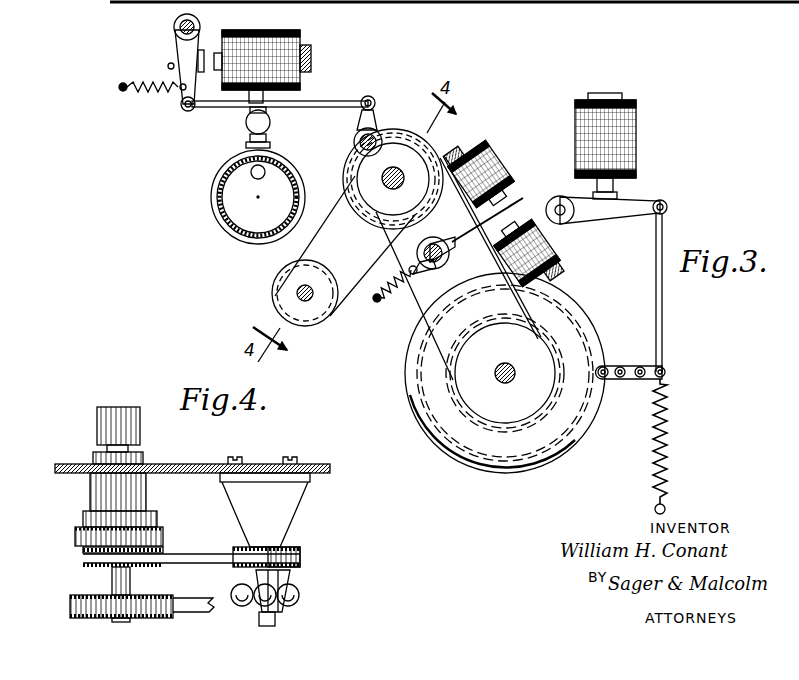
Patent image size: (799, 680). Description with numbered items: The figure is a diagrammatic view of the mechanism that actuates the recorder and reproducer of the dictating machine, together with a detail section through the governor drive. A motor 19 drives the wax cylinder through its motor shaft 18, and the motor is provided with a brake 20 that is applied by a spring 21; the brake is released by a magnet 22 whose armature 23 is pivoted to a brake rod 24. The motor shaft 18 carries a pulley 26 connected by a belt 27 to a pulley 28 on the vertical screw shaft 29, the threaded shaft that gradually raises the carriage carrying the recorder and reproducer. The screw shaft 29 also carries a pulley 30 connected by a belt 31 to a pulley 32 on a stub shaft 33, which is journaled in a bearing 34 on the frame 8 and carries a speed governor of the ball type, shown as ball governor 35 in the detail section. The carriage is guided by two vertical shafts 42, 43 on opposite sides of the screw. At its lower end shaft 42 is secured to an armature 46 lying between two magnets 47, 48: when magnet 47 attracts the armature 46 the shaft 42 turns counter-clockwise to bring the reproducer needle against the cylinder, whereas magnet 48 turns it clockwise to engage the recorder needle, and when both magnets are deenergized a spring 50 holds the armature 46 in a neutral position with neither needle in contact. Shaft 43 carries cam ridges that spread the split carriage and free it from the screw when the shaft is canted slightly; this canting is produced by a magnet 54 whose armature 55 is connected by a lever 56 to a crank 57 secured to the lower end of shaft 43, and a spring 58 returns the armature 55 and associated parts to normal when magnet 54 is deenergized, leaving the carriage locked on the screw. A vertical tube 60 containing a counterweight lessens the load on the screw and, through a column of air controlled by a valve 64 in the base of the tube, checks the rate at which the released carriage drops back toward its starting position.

In FIG. 4, the frame 8 is at (318, 463).
In FIG. 3, the motor shaft 18 is at (512, 355).
In FIG. 3, the motor 19 is at (585, 426).
In FIG. 3, the brake 20 is at (628, 370).
In FIG. 3, the spring 21 is at (668, 419).
In FIG. 3, the magnet 22 is at (633, 116).
In FIG. 3, the armature 23 is at (638, 207).
In FIG. 3, the brake rod 24 is at (663, 320).
In FIG. 3, the pulley 26 is at (503, 412).
In FIG. 3, the belt 27 is at (416, 312).
In FIG. 4, the belt 27 is at (207, 600).
In FIG. 3, the pulley 28 is at (352, 217).
In FIG. 4, the pulley 28 is at (168, 599).
In FIG. 3, the vertical screw shaft 29 is at (391, 189).
In FIG. 4, the vertical screw shaft 29 is at (110, 578).
In FIG. 3, the pulley 30 is at (398, 141).
In FIG. 4, the pulley 30 is at (83, 550).
In FIG. 3, the belt 31 is at (330, 206).
In FIG. 4, the belt 31 is at (205, 554).
In FIG. 3, the pulley 32 is at (295, 287).
In FIG. 4, the pulley 32 is at (293, 550).
In FIG. 3, the stub shaft 33 is at (311, 303).
In FIG. 4, the stub shaft 33 is at (290, 573).
In FIG. 4, the bearing 34 is at (282, 506).
In FIG. 4, the ball governor 35 is at (300, 596).
In FIG. 3, the vertical shaft 42 is at (449, 232).
In FIG. 3, the vertical shaft 43 is at (354, 143).
In FIG. 3, the armature 46 is at (500, 210).
In FIG. 3, the magnet 47 is at (480, 150).
In FIG. 3, the magnet 48 is at (548, 248).
In FIG. 3, the spring 50 is at (393, 300).
In FIG. 3, the magnet 54 is at (276, 30).
In FIG. 3, the armature 55 is at (178, 45).
In FIG. 3, the lever 56 is at (338, 101).
In FIG. 3, the crank 57 is at (360, 119).
In FIG. 3, the spring 58 is at (153, 93).
In FIG. 3, the vertical tube 60 is at (217, 187).
In FIG. 3, the valve 64 is at (246, 123).